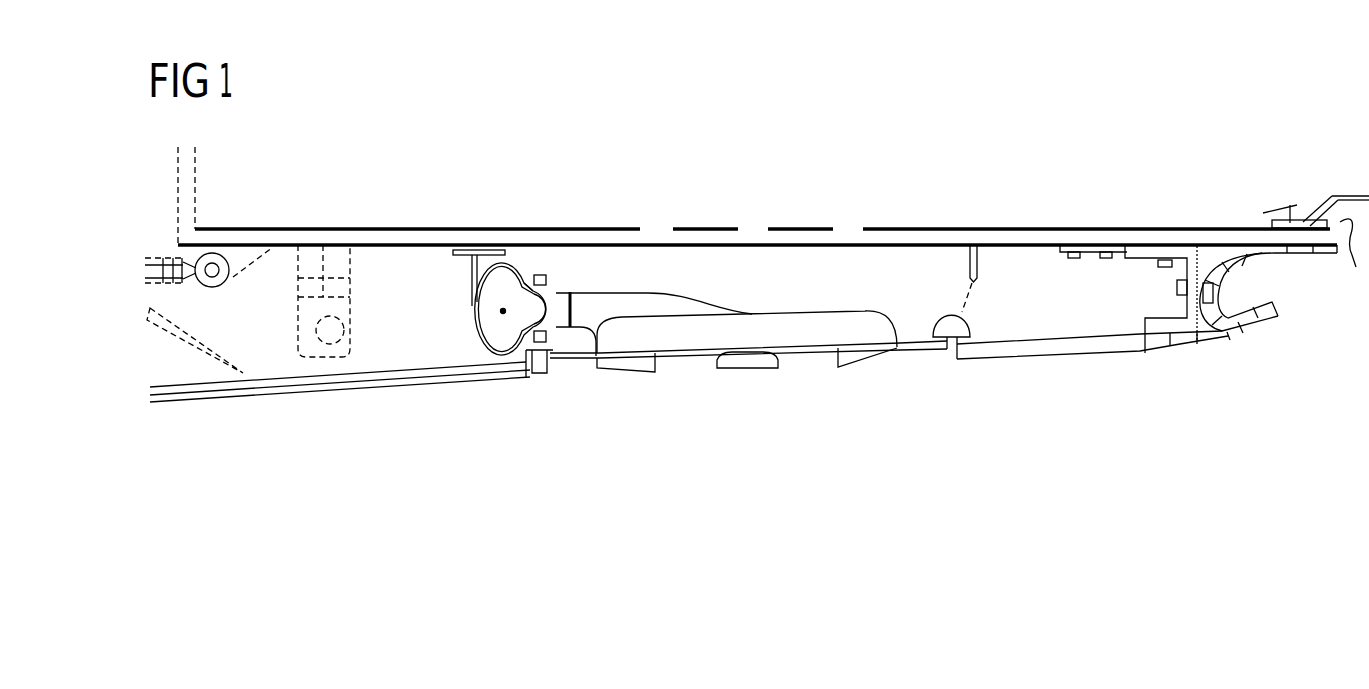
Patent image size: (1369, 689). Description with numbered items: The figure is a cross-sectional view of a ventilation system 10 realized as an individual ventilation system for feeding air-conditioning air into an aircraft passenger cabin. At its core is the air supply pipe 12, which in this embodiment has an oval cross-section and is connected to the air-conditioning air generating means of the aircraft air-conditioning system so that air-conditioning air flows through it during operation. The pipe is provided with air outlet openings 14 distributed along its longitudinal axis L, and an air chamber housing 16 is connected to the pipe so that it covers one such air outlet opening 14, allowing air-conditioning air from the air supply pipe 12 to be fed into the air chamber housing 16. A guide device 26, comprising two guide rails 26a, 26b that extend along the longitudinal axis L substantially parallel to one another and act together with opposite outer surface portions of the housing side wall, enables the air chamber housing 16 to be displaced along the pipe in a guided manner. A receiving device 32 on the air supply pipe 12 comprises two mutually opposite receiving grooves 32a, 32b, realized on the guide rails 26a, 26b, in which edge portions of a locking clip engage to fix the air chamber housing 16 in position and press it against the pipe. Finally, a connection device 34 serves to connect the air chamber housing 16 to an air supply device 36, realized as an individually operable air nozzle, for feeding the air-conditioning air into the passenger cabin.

The ventilation system 10 is at (580, 269).
The air supply pipe 12 is at (478, 330).
The air outlet openings 14 is at (478, 352).
The air chamber housing 16 is at (557, 307).
The guide device 26 is at (507, 312).
The guide rail 26a is at (529, 280).
The guide rail 26b is at (520, 356).
The receiving device 32 is at (582, 309).
The receiving groove 32a is at (550, 277).
The receiving groove 32b is at (548, 344).
The connection device 34 is at (568, 300).
The air supply device 36 is at (700, 340).
The longitudinal axis L is at (503, 311).